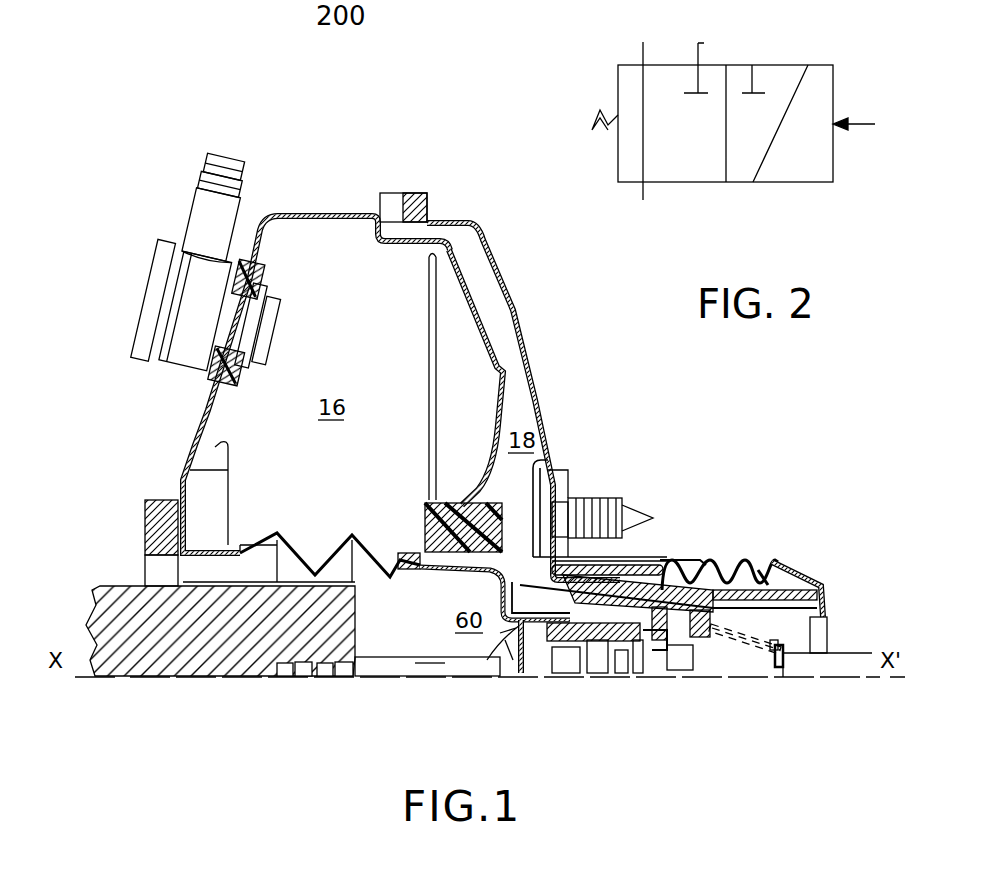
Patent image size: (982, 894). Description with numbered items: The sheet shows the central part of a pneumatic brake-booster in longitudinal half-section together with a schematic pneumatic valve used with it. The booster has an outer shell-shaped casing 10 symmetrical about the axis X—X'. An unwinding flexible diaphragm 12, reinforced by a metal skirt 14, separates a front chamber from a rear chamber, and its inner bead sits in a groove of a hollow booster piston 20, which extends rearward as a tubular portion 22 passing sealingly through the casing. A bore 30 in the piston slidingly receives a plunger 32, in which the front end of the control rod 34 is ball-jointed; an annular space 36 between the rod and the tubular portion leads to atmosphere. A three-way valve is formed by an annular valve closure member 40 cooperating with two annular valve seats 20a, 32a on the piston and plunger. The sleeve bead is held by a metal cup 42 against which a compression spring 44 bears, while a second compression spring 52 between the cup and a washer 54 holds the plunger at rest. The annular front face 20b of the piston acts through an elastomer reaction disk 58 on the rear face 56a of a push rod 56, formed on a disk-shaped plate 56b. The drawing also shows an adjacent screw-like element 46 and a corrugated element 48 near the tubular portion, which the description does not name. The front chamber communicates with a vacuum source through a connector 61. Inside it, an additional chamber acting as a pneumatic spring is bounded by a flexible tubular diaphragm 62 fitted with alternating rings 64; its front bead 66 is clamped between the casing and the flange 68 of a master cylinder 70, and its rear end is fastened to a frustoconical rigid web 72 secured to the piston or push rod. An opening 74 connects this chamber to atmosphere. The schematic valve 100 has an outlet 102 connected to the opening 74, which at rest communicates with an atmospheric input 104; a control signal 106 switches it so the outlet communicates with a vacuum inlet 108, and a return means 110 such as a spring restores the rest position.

In FIG. 1, the outer shell-shaped casing 10 is at (300, 213).
In FIG. 1, the unwinding flexible diaphragm 12 is at (440, 222).
In FIG. 1, the metal support disk or skirt 14 is at (445, 278).
In FIG. 1, the hollow booster piston 20 is at (463, 562).
In FIG. 1, the annular valve seat 20a is at (650, 610).
In FIG. 1, the annular front face 20b is at (540, 640).
In FIG. 1, the tubular portion 22 is at (787, 593).
In FIG. 1, the bore 30 is at (558, 627).
In FIG. 1, the plunger 32 is at (600, 668).
In FIG. 1, the annular valve seat 32a is at (652, 657).
In FIG. 1, the brake-booster control rod 34 is at (838, 652).
In FIG. 1, the annular space 36 is at (733, 647).
In FIG. 1, the annular valve closure member 40 is at (655, 665).
In FIG. 1, the metal cup 42 is at (762, 583).
In FIG. 1, the compression spring 44 is at (682, 647).
In FIG. 1, the adjusting screw 46 is at (548, 498).
In FIG. 1, the bellows 48 is at (730, 573).
In FIG. 1, the compression spring 52 is at (765, 652).
In FIG. 1, the washer 54 is at (785, 670).
In FIG. 1, the push rod 56 is at (428, 670).
In FIG. 1, the rear face 56a is at (513, 657).
In FIG. 1, the disk-shaped plate 56b is at (516, 668).
In FIG. 1, the reaction disk 58 is at (532, 667).
In FIG. 1, the connector 61 is at (160, 258).
In FIG. 1, the flexible tubular diaphragm 62 is at (300, 550).
In FIG. 1, the rings 64 is at (360, 577).
In FIG. 1, the bead 66 is at (175, 545).
In FIG. 1, the flange 68 is at (160, 505).
In FIG. 1, the master cylinder 70 is at (170, 650).
In FIG. 1, the rigid web 72 is at (420, 668).
In FIG. 1, the opening 74 is at (155, 572).
In FIG. 2, the valve 100 is at (760, 200).
In FIG. 2, the outlet 102 is at (643, 200).
In FIG. 2, the input 104 is at (643, 50).
In FIG. 2, the control signal 106 is at (860, 125).
In FIG. 2, the inlet 108 is at (704, 52).
In FIG. 2, the return means 110 is at (600, 118).